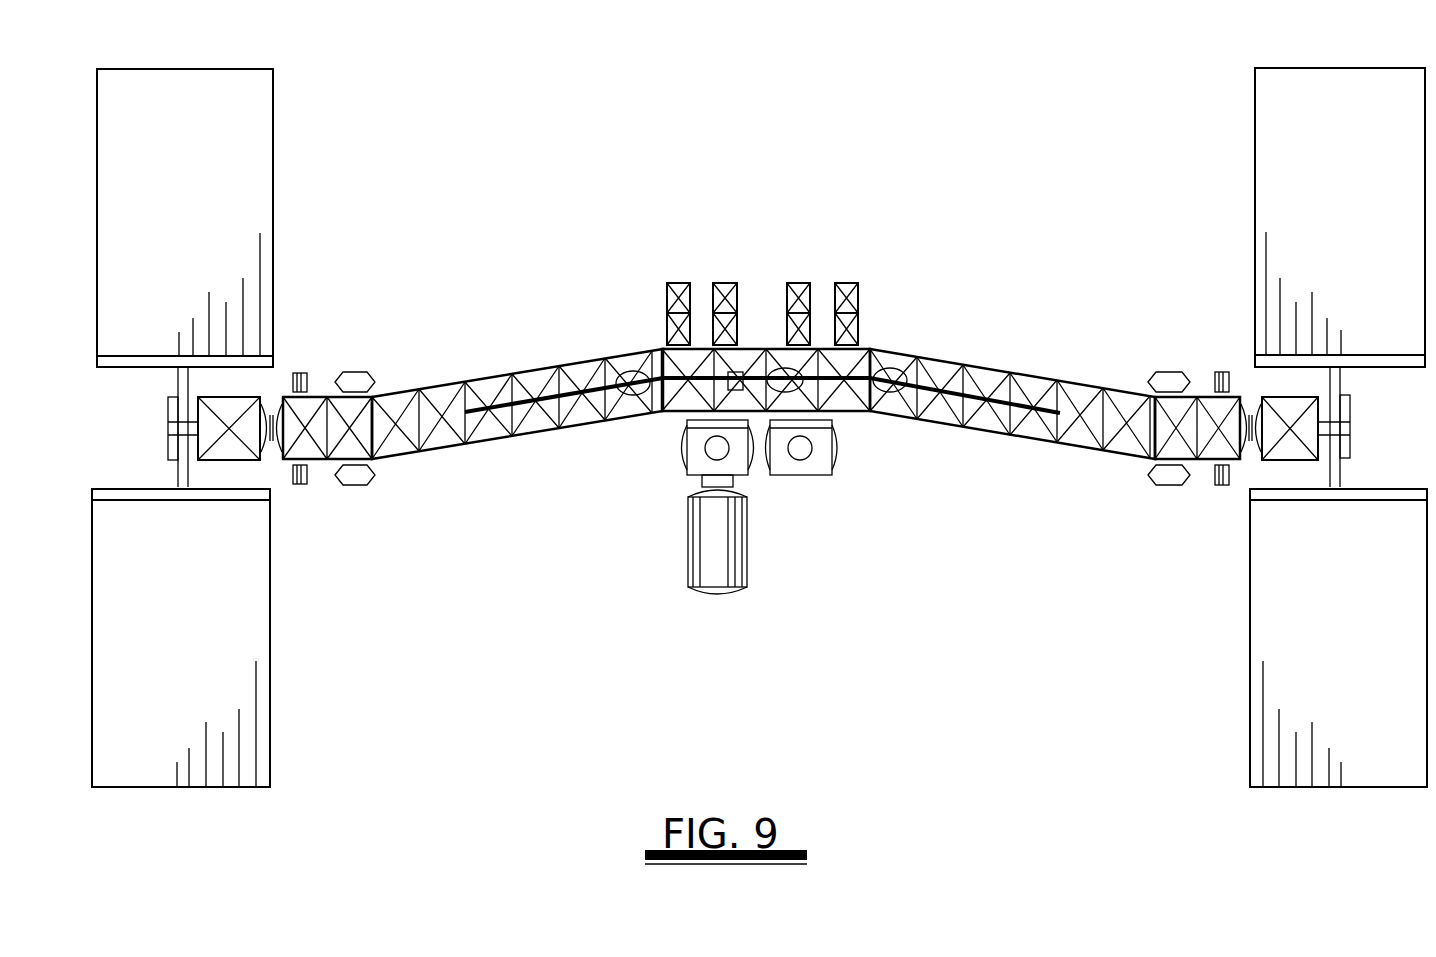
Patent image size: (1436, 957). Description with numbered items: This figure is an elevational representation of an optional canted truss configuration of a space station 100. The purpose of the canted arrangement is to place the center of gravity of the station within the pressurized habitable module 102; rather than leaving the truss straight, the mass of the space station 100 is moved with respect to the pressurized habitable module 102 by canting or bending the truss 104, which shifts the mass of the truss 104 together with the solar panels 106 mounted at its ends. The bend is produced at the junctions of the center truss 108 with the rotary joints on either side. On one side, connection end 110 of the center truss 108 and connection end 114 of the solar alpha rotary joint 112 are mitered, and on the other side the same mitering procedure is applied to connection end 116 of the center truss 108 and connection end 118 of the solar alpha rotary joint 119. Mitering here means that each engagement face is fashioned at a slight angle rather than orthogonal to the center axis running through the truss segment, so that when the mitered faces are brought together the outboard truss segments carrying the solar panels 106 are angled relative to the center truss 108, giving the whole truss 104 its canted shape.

The space station 100 is at (622, 585).
The pressurized habitable module 102 is at (779, 518).
The truss 104 is at (512, 372).
The solar panels 106 is at (252, 173).
The center truss 108 is at (757, 347).
The connection end 110 is at (868, 347).
The solar alpha rotary joint 112 is at (1203, 462).
The connection end 114 is at (1130, 369).
The connection end 116 is at (667, 412).
The connection end 118 is at (372, 457).
The solar alpha rotary joint 119 is at (325, 397).